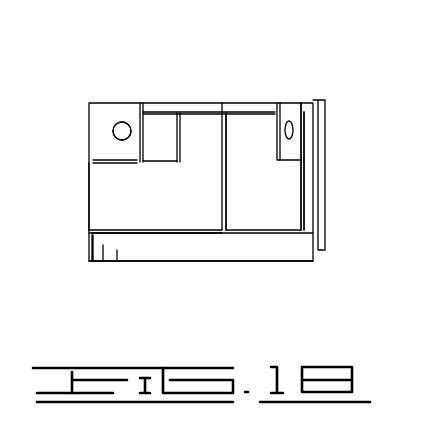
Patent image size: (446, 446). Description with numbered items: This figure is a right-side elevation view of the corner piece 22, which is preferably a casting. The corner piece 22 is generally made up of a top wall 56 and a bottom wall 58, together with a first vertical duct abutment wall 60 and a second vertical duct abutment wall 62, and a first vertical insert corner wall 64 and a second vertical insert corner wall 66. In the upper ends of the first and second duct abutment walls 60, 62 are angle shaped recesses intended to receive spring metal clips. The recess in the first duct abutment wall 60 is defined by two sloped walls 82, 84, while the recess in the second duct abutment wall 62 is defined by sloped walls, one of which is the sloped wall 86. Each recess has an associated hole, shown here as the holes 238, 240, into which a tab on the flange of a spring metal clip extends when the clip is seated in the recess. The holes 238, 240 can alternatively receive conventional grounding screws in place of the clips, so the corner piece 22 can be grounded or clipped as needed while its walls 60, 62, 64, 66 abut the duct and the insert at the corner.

The corner piece 22 is at (305, 62).
The top wall 56 is at (127, 103).
The bottom wall 58 is at (142, 250).
The first vertical duct abutment wall 60 is at (108, 207).
The second vertical duct abutment wall 62 is at (305, 153).
The first vertical insert corner wall 64 is at (223, 165).
The second vertical insert corner wall 66 is at (278, 203).
The sloped wall 82 is at (102, 147).
The sloped wall 84 is at (160, 130).
The sloped wall 86 is at (293, 110).
The hole 238 is at (122, 128).
The hole 240 is at (289, 130).